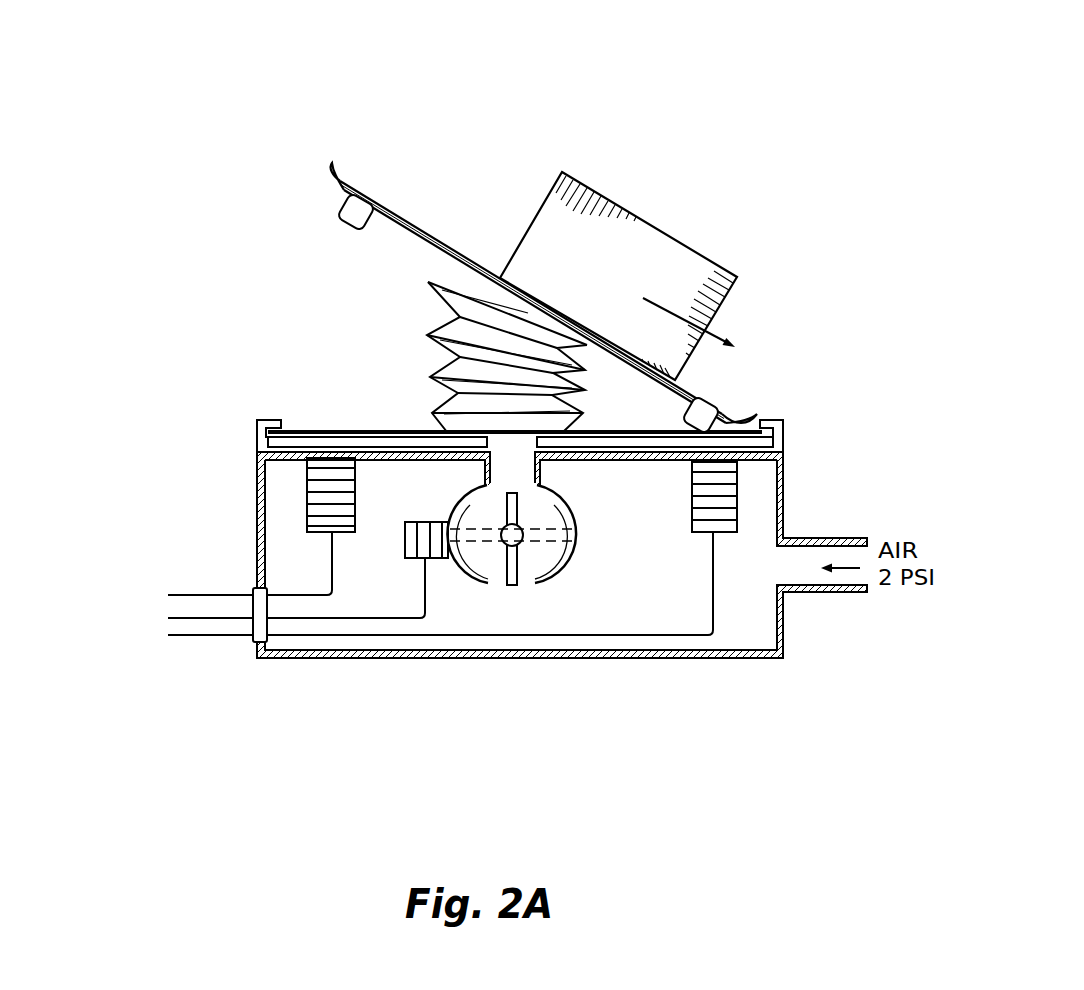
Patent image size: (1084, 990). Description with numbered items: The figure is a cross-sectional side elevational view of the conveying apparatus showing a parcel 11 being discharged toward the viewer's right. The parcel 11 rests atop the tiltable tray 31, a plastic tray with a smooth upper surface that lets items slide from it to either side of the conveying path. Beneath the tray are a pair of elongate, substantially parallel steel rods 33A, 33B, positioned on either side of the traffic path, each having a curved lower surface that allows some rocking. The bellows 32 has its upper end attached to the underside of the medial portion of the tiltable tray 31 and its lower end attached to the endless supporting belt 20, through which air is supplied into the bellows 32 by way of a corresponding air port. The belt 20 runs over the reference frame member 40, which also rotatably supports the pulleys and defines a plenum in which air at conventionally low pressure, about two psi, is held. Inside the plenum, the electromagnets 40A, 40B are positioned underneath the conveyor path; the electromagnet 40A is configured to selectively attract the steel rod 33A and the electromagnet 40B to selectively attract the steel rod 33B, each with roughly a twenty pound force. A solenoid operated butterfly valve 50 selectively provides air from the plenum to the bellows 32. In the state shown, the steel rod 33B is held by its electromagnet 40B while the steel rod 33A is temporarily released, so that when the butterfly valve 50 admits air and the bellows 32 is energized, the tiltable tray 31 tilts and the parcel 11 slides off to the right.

The tiltable tray 31 is at (386, 213).
The steel rod 33A is at (338, 207).
The bellows 32 is at (475, 290).
The parcel 11 is at (632, 258).
The endless supporting belt 20 is at (378, 424).
The steel rod 33B is at (707, 417).
The electromagnet 40A is at (317, 497).
The electromagnet 40B is at (712, 515).
The solenoid operated butterfly valve 50 is at (513, 570).
The reference frame member 40 is at (623, 660).